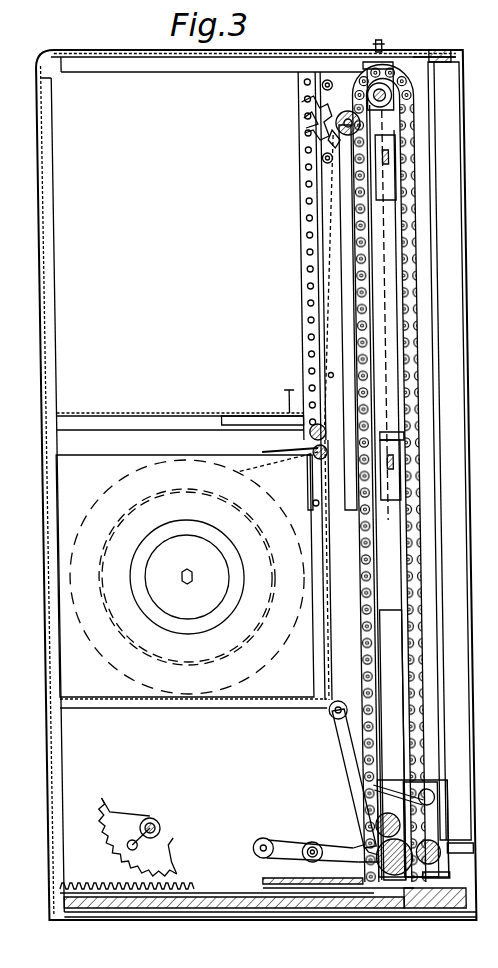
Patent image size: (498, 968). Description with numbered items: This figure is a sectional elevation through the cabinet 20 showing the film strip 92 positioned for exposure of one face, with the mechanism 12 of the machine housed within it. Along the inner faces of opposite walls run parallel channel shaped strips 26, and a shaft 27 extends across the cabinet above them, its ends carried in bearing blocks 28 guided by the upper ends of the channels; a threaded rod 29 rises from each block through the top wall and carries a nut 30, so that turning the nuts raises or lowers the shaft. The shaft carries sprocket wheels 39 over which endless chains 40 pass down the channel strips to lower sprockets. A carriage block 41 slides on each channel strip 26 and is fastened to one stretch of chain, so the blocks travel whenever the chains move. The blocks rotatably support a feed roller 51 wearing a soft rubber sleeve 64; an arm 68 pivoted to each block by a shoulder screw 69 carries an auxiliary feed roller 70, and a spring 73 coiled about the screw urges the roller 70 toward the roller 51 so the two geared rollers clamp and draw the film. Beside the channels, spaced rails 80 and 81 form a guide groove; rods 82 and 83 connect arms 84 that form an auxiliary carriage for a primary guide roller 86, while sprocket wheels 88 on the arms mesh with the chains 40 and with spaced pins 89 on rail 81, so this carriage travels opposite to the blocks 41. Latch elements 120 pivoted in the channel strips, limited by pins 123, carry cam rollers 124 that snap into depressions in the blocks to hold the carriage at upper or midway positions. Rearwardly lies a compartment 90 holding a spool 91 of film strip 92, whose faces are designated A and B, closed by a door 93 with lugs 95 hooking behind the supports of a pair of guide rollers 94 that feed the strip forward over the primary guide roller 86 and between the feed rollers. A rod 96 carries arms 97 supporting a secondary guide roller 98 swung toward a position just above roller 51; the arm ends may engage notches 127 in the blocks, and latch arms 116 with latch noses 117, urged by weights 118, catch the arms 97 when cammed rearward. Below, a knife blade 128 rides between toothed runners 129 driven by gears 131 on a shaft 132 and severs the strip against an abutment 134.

The cabinet 20 is at (35, 305).
The lift rod 12 is at (378, 40).
The nut 30 is at (374, 44).
The threaded rod 29 is at (382, 84).
The bearing block 28 is at (418, 56).
The shaft 27 is at (392, 92).
The sprocket wheel 39 is at (430, 108).
The cam roller 124 is at (388, 158).
The latch element 120 is at (394, 185).
The pin 123 is at (396, 434).
The endless chain 40 is at (414, 240).
The rod 83 is at (320, 85).
The pin 89 is at (300, 104).
The sprocket wheel 88 is at (302, 121).
The arm 84 is at (334, 126).
The primary guide roller 86 is at (328, 142).
The rod 82 is at (322, 162).
The rail 81 is at (337, 205).
The rail 80 is at (303, 236).
The film strip 92 is at (326, 305).
The face of the film strip A is at (327, 340).
The face of the film strip B is at (322, 375).
The guide roller 94 is at (303, 436).
The lug 95 is at (305, 490).
The door 93 is at (322, 585).
The channel shaped strip 26 is at (392, 620).
The spool 91 is at (135, 600).
The compartment 90 is at (268, 700).
The rod 96 is at (326, 722).
The arm 97 is at (343, 770).
The secondary guide roller 98 is at (376, 813).
The carriage block 41 is at (410, 790).
The shoulder screw 69 is at (422, 792).
The arm 68 is at (420, 812).
The spring 73 is at (428, 840).
The auxiliary feed roller 70 is at (460, 848).
The abutment 134 is at (436, 875).
The shaft 132 is at (146, 822).
The operating gear 131 is at (145, 842).
The runner 129 is at (208, 883).
The weight 118 is at (250, 838).
The latch arm 116 is at (291, 843).
The latch nose 117 is at (345, 848).
The knife blade 128 is at (290, 884).
The notch 127 is at (340, 890).
The feed roller 51 is at (380, 876).
The soft rubber sleeve 64 is at (412, 865).